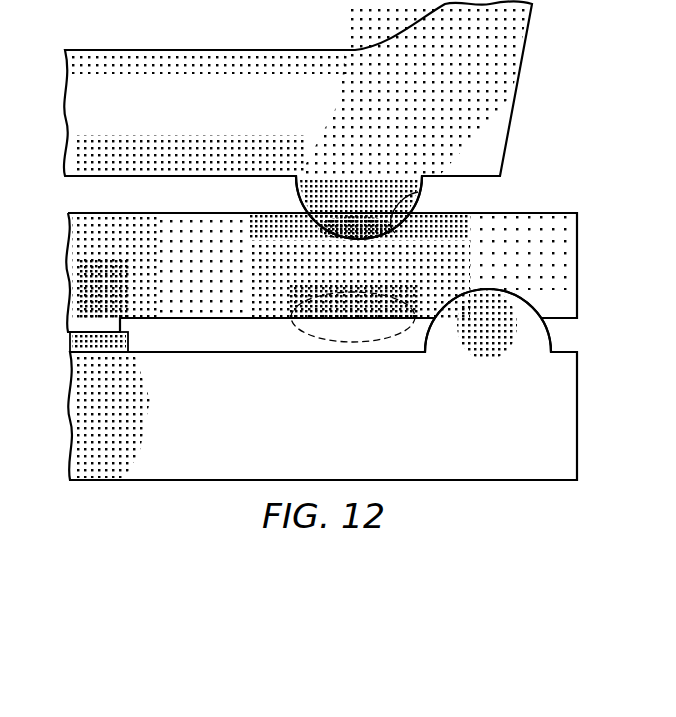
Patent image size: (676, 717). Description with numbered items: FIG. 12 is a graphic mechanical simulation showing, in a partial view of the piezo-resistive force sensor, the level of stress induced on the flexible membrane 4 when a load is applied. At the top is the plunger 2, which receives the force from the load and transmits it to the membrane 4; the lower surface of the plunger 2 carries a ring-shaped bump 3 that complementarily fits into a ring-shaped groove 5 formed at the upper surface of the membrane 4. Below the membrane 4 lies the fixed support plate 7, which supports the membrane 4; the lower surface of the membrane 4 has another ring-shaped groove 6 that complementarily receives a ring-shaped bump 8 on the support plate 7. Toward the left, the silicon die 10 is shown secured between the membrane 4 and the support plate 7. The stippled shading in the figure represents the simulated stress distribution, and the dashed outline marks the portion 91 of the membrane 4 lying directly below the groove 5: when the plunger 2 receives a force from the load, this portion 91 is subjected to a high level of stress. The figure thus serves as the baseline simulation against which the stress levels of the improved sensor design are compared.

The plunger 2 is at (70, 87).
The ring-shaped bump 3 is at (343, 188).
The flexible membrane 4 is at (66, 265).
The ring-shaped groove 5 is at (418, 195).
The ring-shaped groove 6 is at (520, 290).
The support plate 7 is at (68, 412).
The ring-shaped bump 8 is at (498, 325).
The silicon die 10 is at (68, 343).
The portion below the groove 91 is at (315, 340).